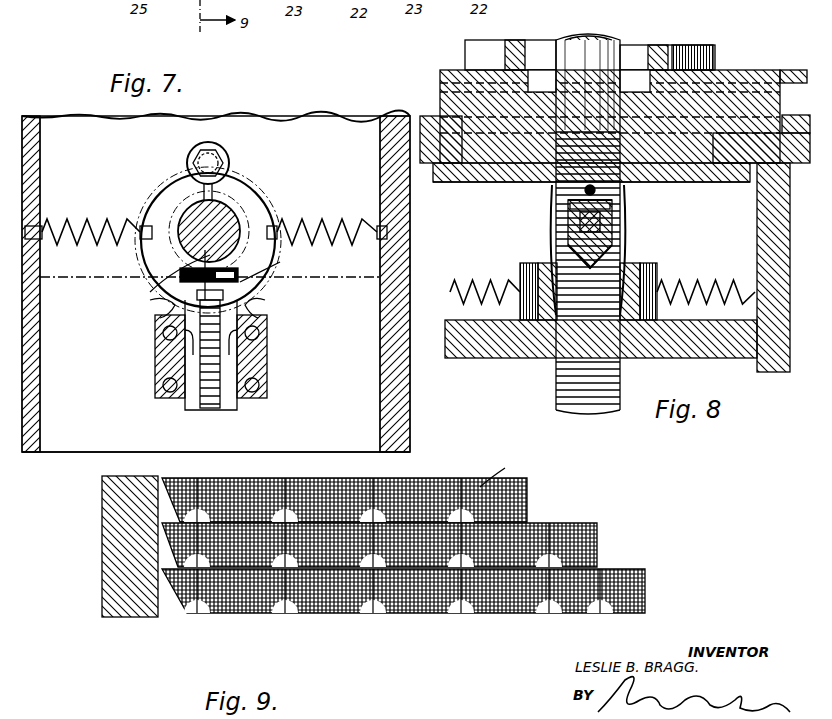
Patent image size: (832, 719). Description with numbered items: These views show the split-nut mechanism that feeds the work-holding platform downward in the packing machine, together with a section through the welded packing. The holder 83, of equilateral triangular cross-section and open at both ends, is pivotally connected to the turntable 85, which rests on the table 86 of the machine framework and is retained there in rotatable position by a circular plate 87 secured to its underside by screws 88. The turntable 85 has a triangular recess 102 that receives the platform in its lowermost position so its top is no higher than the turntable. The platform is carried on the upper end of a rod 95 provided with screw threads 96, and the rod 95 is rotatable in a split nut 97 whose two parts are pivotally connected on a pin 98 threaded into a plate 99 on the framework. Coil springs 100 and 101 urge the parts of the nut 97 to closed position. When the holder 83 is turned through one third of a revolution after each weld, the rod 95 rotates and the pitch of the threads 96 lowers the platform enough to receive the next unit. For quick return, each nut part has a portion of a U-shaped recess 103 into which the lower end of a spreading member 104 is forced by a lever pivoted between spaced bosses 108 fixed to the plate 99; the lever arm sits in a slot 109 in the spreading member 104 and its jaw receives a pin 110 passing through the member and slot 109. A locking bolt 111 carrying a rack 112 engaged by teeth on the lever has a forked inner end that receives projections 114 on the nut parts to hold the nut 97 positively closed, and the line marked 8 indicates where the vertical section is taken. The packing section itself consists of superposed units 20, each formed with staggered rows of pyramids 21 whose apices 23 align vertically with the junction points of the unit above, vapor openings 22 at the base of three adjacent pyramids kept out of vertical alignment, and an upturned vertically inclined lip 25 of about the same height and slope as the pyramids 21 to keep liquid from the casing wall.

In FIG. 7, the section line 8— 8 is at (55, 281).
In FIG. 8, the section line 8— 8 is at (420, 282).
In FIG. 9, the packing unit 20 is at (540, 482).
In FIG. 9, the pyramid 21 is at (499, 468).
In FIG. 9, the vapor opening 22 is at (240, 615).
In FIG. 9, the apex 23 is at (425, 478).
In FIG. 9, the vertically inclined lip 25 is at (165, 498).
In FIG. 8, the holder 83 is at (700, 45).
In FIG. 9, the holder 83 is at (130, 618).
In FIG. 8, the turntable 85 is at (735, 70).
In FIG. 8, the table 86 is at (440, 240).
In FIG. 8, the circular plate 87 is at (705, 175).
In FIG. 8, the screws 88 is at (500, 185).
In FIG. 7, the rod 95 is at (165, 285).
In FIG. 8, the rod 95 is at (610, 42).
In FIG. 8, the screw threads 96 is at (615, 195).
In FIG. 7, the split nut 97 is at (247, 184).
In FIG. 8, the split nut 97 is at (540, 263).
In FIG. 7, the pin 98 is at (197, 162).
In FIG. 7, the plate 99 is at (92, 453).
In FIG. 8, the plate 99 is at (490, 358).
In FIG. 7, the coil spring 100 is at (88, 218).
In FIG. 8, the coil spring 100 is at (475, 272).
In FIG. 7, the coil spring 101 is at (333, 218).
In FIG. 8, the coil spring 101 is at (712, 282).
In FIG. 8, the triangular recess 102 is at (532, 70).
In FIG. 7, the U-shaped recess 103 is at (250, 296).
In FIG. 8, the U-shaped recess 103 is at (650, 262).
In FIG. 8, the spreading member 104 is at (568, 247).
In FIG. 7, the bosses 108 is at (270, 340).
In FIG. 8, the slot 109 is at (614, 240).
In FIG. 8, the pin 110 is at (560, 215).
In FIG. 7, the locking bolt 111 is at (230, 358).
In FIG. 7, the rack 112 is at (200, 358).
In FIG. 7, the projection 114 is at (165, 310).